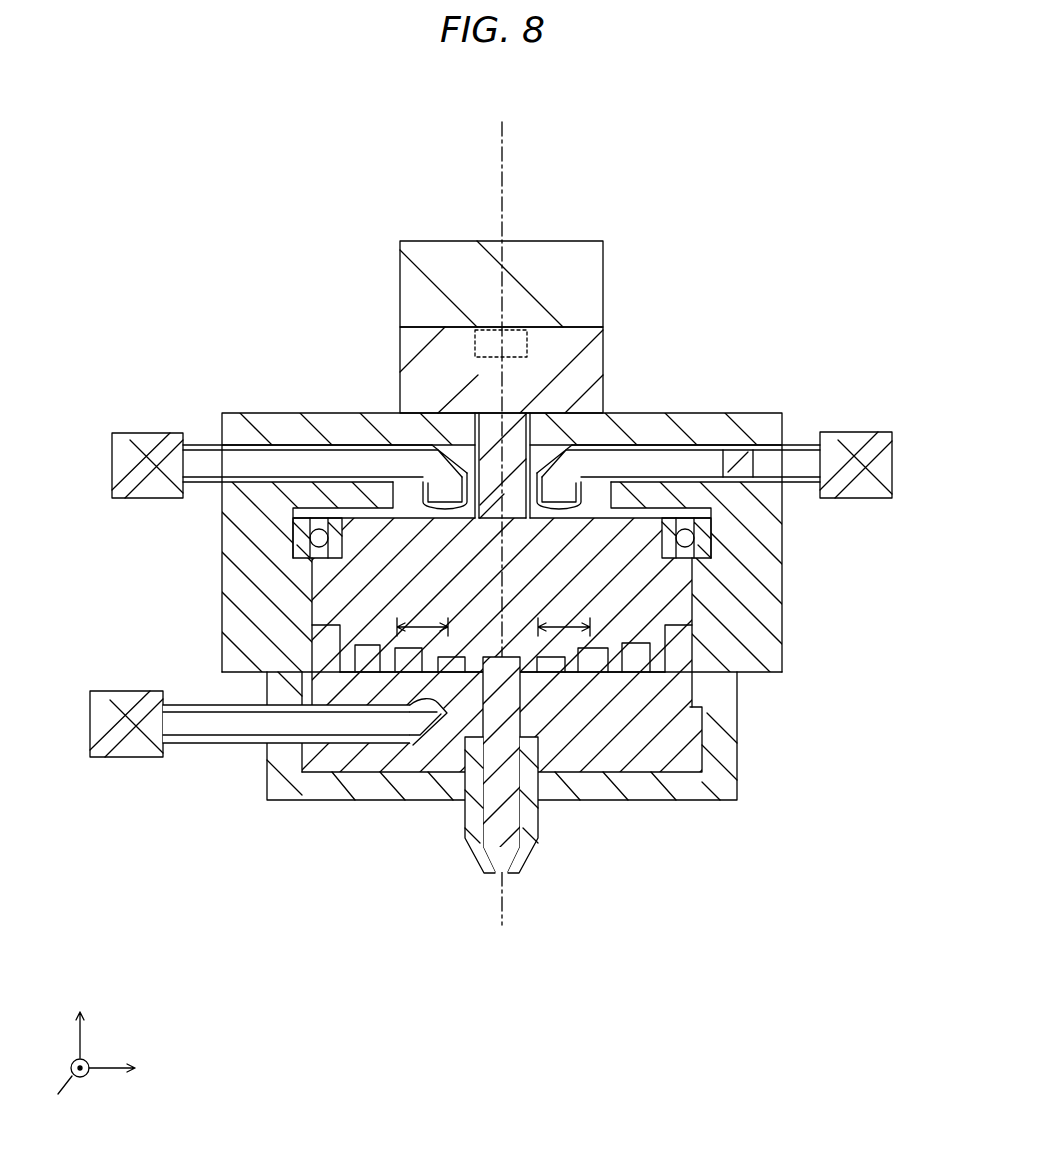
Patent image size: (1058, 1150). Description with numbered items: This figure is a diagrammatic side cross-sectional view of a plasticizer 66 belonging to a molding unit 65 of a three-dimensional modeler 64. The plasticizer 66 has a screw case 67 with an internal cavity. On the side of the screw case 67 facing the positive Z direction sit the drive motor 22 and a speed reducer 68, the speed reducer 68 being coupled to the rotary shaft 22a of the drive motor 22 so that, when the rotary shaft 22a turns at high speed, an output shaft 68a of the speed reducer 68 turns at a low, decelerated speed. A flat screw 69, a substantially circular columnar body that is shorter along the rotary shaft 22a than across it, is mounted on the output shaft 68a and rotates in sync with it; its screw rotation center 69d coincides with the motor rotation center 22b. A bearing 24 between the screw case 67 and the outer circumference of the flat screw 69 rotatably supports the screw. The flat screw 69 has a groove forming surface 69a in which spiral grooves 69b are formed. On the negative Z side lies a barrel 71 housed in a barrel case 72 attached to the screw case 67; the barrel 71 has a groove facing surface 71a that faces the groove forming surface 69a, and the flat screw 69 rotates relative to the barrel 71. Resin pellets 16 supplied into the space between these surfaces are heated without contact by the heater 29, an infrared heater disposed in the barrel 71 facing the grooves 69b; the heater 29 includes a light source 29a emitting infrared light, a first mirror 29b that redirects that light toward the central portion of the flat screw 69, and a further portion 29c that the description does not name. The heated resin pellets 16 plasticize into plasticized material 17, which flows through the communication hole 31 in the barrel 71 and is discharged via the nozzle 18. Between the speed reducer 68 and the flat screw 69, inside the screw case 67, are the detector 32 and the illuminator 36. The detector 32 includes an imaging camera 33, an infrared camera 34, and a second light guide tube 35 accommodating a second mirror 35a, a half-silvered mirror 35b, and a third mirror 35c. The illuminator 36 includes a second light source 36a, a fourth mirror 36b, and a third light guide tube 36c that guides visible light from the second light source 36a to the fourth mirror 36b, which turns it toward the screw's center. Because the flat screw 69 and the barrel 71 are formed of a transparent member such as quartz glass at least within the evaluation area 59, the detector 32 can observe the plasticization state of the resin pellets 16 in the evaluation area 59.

The resin pellets 16 is at (640, 642).
The plasticized material 17 is at (585, 790).
The nozzle 18 is at (525, 860).
The drive motor 22 is at (433, 252).
The rotary shaft 22a is at (512, 345).
The motor rotation center 22b is at (505, 137).
The bearing 24 is at (695, 538).
The heater 29 is at (452, 910).
The light source 29a is at (130, 757).
The first mirror 29b is at (435, 745).
The lower actuator rod 29c is at (213, 745).
The communication hole 31 is at (515, 822).
The detector 32 is at (943, 310).
The imaging camera 33 is at (882, 404).
The infrared camera 34 is at (862, 432).
The second light guide tube 35 is at (800, 445).
The second mirror 35a is at (560, 462).
The half-silvered mirror 35b is at (772, 394).
The third mirror 35c is at (738, 450).
The illuminator 36 is at (305, 310).
The second light source 36a is at (136, 433).
The fourth mirror 36b is at (440, 462).
The third light guide tube 36c is at (205, 445).
The evaluation area 59 is at (493, 600).
The three-dimensional modeler 64 is at (851, 105).
The molding unit 65 is at (493, 590).
The plasticizer 66 is at (493, 590).
The screw case 67 is at (350, 414).
The speed reducer 68 is at (418, 350).
The output shaft 68a is at (523, 425).
The flat screw 69 is at (673, 583).
The groove forming surface 69a is at (660, 680).
The spiral grooves 69b is at (643, 638).
The screw rotation center 69d is at (505, 535).
The barrel 71 is at (562, 666).
The groove facing surface 71a is at (328, 625).
The barrel case 72 is at (728, 765).